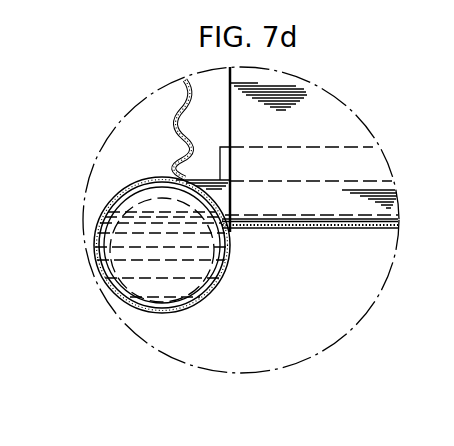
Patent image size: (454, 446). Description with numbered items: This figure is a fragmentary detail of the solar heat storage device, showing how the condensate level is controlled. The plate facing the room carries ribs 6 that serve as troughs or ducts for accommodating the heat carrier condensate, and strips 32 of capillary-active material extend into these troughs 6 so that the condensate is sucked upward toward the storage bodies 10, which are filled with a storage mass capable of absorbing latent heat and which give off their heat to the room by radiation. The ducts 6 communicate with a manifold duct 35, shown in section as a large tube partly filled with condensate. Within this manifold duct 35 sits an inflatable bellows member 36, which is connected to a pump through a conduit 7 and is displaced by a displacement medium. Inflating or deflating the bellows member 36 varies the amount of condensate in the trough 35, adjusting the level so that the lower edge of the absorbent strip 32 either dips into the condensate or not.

The ribs 6 is at (322, 230).
The flexible tube 7 is at (194, 125).
The storage bodies 10 is at (360, 147).
The strips 32 is at (341, 120).
The manifold duct 35 is at (115, 253).
The inflatable bellows member 36 is at (152, 185).